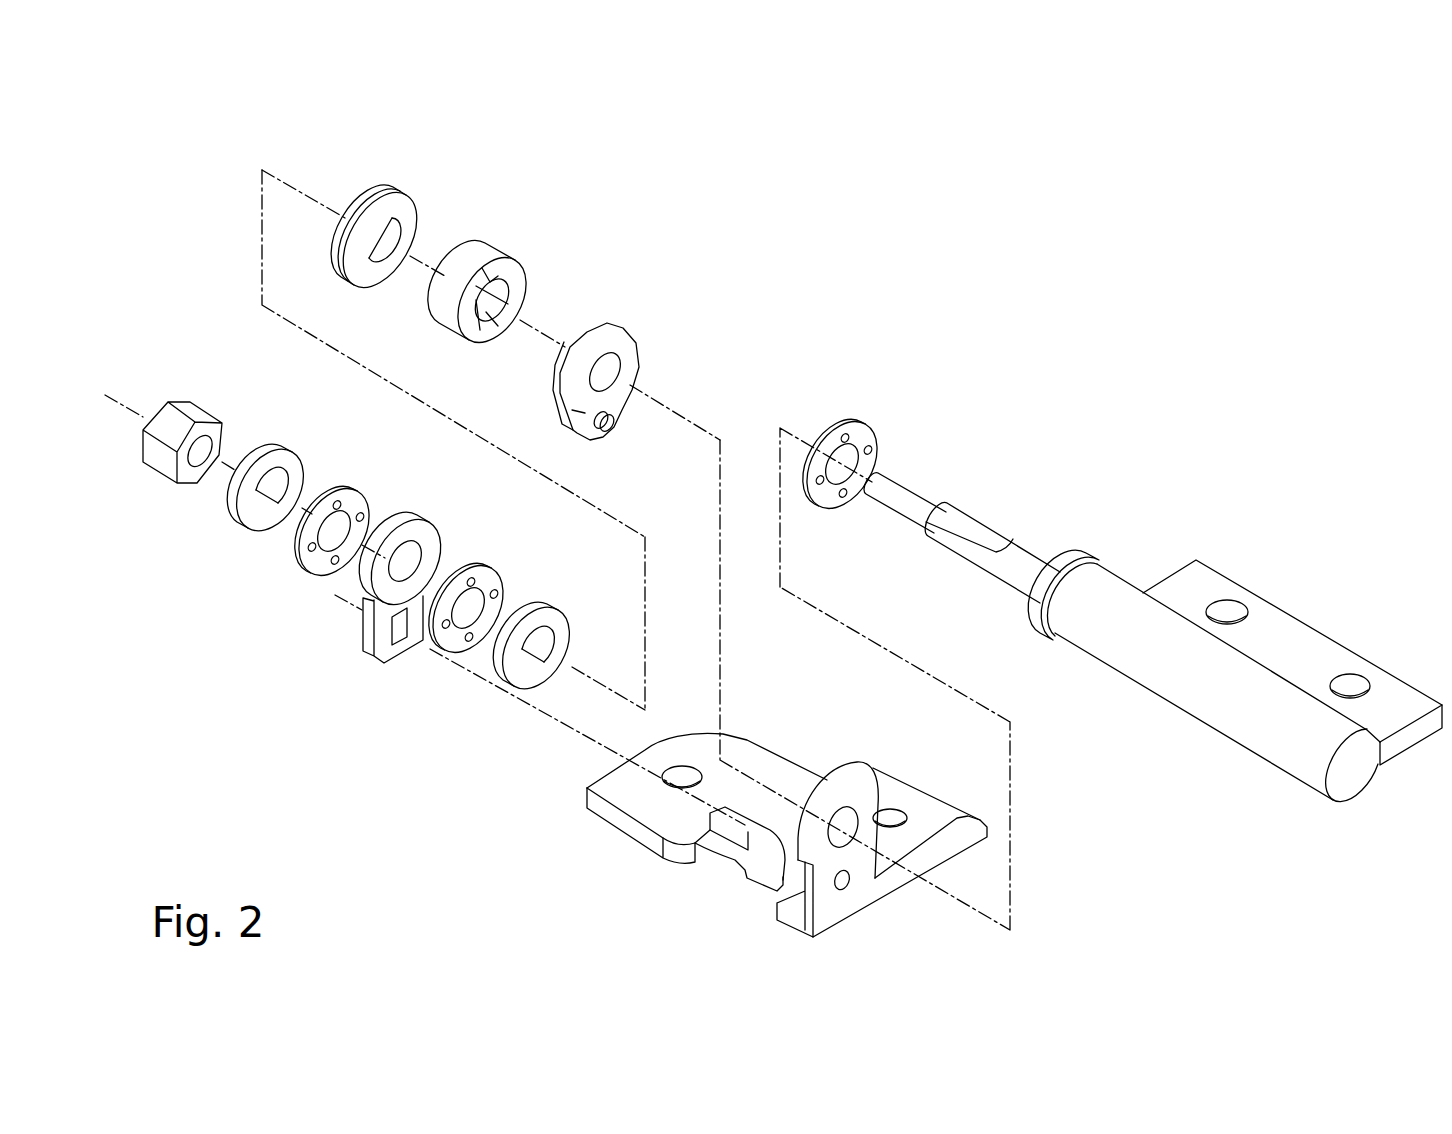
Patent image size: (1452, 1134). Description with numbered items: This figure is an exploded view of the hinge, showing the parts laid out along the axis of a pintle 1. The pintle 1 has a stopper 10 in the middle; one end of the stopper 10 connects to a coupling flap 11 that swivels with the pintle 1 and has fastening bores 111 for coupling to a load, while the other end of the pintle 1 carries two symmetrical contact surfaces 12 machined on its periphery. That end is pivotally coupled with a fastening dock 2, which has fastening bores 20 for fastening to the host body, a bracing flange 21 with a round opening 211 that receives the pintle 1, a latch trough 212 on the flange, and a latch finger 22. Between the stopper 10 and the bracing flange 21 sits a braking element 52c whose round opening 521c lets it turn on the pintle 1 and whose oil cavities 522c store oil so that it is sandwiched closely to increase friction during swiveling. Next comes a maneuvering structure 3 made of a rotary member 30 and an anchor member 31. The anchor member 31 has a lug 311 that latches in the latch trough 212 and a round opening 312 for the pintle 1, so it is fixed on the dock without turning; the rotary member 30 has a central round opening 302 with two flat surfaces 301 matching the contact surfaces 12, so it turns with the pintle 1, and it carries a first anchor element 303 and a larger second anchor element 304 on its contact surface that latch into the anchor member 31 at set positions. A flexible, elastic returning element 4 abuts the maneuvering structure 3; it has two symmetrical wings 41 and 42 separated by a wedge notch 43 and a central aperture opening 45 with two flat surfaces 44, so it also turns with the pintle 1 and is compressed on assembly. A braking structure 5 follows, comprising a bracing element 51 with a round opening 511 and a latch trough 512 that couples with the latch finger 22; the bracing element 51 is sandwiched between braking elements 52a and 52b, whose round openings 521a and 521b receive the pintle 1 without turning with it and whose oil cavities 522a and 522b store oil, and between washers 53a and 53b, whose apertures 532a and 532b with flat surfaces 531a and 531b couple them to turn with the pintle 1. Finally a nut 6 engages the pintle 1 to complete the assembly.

The pintle 1 is at (985, 510).
The stopper 10 is at (1073, 556).
The coupling flap 11 is at (1248, 678).
The fastening bores 111 is at (1242, 605).
The contact surfaces 12 is at (960, 528).
The fastening dock 2 is at (605, 836).
The fastening bores 20 is at (893, 815).
The bracing flange 21 is at (839, 817).
The round opening 211 is at (855, 818).
The latch trough 212 is at (848, 890).
The latch finger 22 is at (730, 830).
The maneuvering structure 3 is at (568, 193).
The rotary member 30 is at (509, 307).
The flat surfaces 301 is at (485, 340).
The round opening 302 is at (498, 303).
The first anchor element 303 is at (495, 277).
The second anchor element 304 is at (503, 330).
The anchor member 31 is at (635, 385).
The lug 311 is at (618, 428).
The round opening 312 is at (612, 369).
The returning element 4 is at (390, 209).
The wing 41 is at (352, 185).
The wing 42 is at (398, 200).
The wedge notch 43 is at (371, 196).
The flat surfaces 44 is at (386, 284).
The aperture opening 45 is at (400, 238).
The braking structure 5 is at (187, 607).
The bracing element 51 is at (415, 574).
The round opening 511 is at (403, 560).
The latch trough 512 is at (402, 653).
The braking element 52a is at (486, 606).
The round opening 521a is at (478, 603).
The oil cavities 522a is at (469, 642).
The braking element 52b is at (340, 523).
The round opening 521b is at (353, 508).
The oil cavities 522b is at (333, 566).
The braking element 52c is at (865, 466).
The round opening 521c is at (855, 445).
The oil cavities 522c is at (845, 500).
The washer 53a is at (568, 639).
The flat surfaces 531a is at (550, 672).
The aperture 532a is at (555, 647).
The washer 53b is at (286, 480).
The flat surfaces 531b is at (270, 527).
The aperture 532b is at (300, 470).
The nut 6 is at (160, 462).